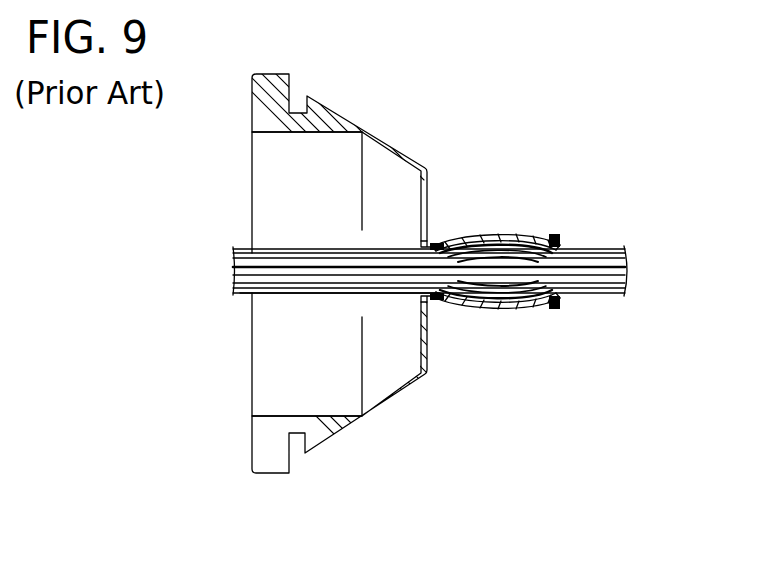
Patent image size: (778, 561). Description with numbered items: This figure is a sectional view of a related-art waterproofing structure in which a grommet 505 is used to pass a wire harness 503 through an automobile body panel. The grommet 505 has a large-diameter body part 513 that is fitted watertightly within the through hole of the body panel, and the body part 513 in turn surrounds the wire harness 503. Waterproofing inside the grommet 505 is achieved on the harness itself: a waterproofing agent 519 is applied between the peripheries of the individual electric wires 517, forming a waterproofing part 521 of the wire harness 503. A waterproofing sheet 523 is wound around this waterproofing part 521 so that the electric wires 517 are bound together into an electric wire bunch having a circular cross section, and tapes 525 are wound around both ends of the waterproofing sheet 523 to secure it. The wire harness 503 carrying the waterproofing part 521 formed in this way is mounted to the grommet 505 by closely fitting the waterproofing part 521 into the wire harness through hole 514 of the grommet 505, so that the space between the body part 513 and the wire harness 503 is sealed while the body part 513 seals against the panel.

The wire harness 503 is at (599, 246).
The grommet 505 is at (382, 268).
The body part 513 is at (340, 430).
The wire harness through hole 514 is at (492, 304).
The electric wires 517 is at (290, 293).
The waterproofing agent 519 is at (497, 234).
The waterproofing part 521 is at (470, 312).
The waterproofing sheet 523 is at (520, 232).
The tapes 525 is at (430, 236).